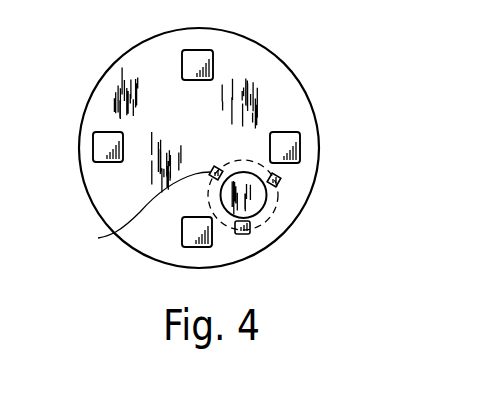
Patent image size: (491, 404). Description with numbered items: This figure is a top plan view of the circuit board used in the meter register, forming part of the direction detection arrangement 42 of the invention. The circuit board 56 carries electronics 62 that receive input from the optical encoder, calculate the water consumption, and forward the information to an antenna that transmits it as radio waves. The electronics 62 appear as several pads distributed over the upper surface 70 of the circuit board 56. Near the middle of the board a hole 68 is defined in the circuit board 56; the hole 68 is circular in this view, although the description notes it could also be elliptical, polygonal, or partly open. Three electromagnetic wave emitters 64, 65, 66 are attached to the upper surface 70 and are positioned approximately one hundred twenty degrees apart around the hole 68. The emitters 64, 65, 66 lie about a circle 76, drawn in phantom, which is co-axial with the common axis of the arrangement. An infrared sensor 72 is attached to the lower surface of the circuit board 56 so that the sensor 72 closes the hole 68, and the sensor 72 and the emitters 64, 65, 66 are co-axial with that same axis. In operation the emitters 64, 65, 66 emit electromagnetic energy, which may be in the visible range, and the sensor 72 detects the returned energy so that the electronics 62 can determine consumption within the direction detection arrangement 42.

The direction detection arrangement 42 is at (314, 81).
The circuit board 56 is at (268, 50).
The electronics 62 is at (213, 52).
The electromagnetic wave emitter 64 is at (282, 180).
The electromagnetic wave emitter 65 is at (141, 213).
The electromagnetic wave emitter 66 is at (243, 234).
The hole 68 is at (268, 209).
The upper surface 70 is at (128, 68).
The infrared sensor 72 is at (243, 197).
The circle 76 is at (243, 160).